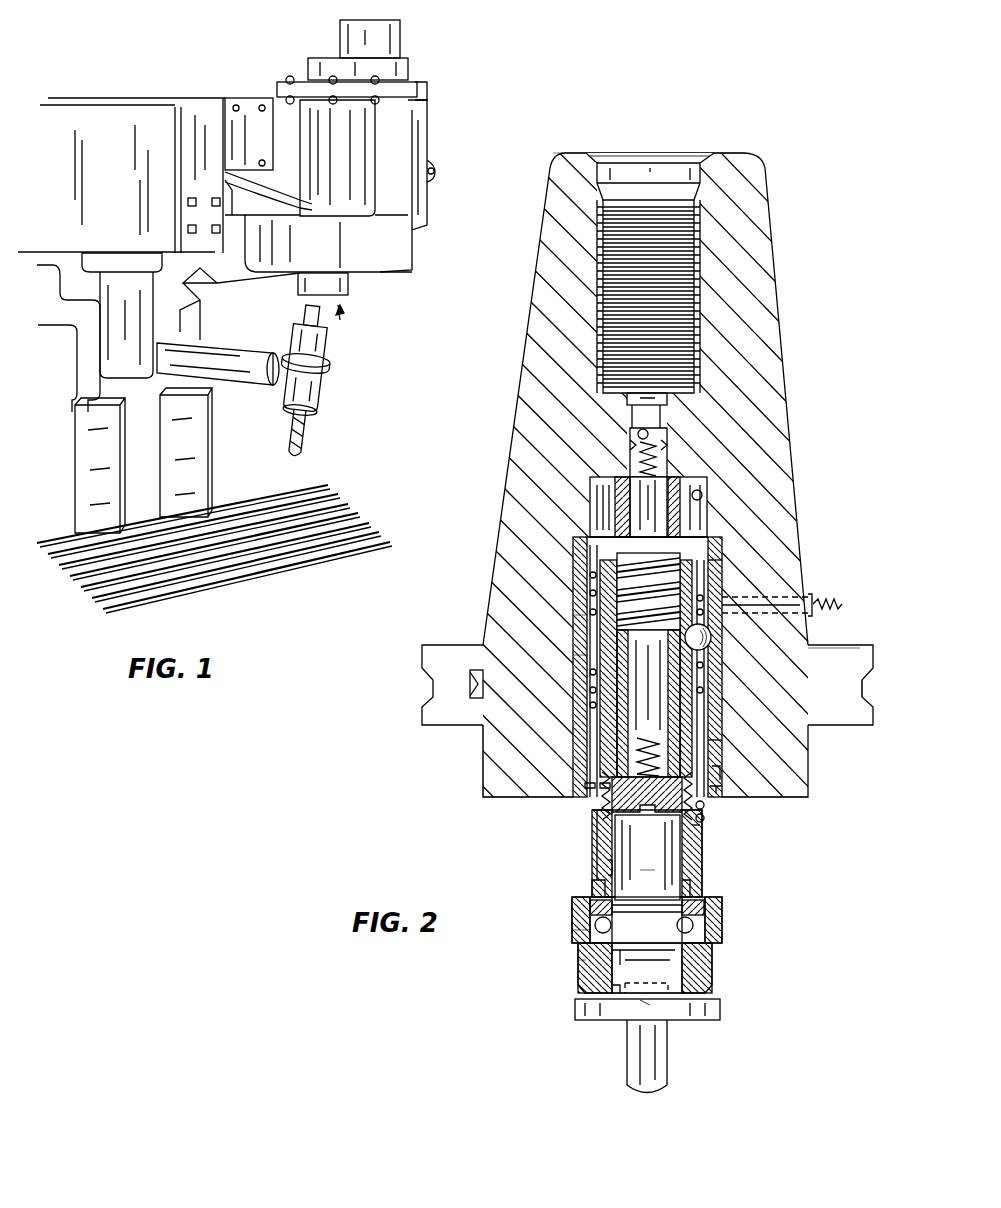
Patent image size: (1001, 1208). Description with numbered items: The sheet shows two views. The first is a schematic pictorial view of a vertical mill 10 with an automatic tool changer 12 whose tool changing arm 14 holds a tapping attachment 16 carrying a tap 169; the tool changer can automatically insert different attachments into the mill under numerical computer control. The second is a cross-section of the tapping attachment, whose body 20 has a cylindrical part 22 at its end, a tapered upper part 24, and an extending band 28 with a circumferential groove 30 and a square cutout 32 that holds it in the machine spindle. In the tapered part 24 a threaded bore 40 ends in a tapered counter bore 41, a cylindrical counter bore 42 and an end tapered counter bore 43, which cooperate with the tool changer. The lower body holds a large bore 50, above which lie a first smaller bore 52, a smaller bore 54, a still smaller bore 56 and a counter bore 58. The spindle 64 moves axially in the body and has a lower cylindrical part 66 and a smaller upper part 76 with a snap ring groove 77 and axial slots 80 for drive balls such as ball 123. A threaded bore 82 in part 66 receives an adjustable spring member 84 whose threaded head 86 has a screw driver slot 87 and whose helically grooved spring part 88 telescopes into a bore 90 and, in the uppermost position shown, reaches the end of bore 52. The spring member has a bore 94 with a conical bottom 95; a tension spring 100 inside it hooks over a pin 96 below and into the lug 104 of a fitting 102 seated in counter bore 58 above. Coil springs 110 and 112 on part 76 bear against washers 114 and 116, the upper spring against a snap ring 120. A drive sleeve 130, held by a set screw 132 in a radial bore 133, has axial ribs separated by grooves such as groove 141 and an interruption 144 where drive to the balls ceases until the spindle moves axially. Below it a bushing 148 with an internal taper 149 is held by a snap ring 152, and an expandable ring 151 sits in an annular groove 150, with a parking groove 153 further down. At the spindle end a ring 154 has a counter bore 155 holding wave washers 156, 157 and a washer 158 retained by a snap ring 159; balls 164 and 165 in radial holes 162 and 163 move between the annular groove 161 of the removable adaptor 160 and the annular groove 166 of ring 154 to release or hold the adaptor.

In FIG. 1, the vertical mill 10 is at (442, 112).
In FIG. 1, the automatic tool changer 12 is at (155, 140).
In FIG. 1, the tool changing arm 14 is at (250, 345).
In FIG. 1, the tapping attachment 16 is at (330, 403).
In FIG. 2, the tapping attachment 16 is at (427, 791).
In FIG. 1, the tap 169 is at (290, 440).
In FIG. 2, the tap 169 is at (635, 1062).
In FIG. 2, the body 20 is at (788, 392).
In FIG. 2, the cylindrical part 22 is at (490, 790).
In FIG. 2, the tapered upper part 24 is at (505, 372).
In FIG. 2, the circular part or band 28 is at (485, 742).
In FIG. 2, the circumferential peripheral groove 30 is at (422, 690).
In FIG. 2, the square cutout 32 is at (422, 662).
In FIG. 2, the threaded bore 40 is at (700, 262).
In FIG. 2, the tapered counter bore 41 is at (700, 195).
In FIG. 2, the cylindrical counter bore 42 is at (600, 170).
In FIG. 2, the end tapered counter bore 43 is at (700, 162).
In FIG. 2, the large bore 50 is at (692, 540).
In FIG. 2, the first smaller bore 52 is at (705, 500).
In FIG. 2, the smaller bore 54 is at (626, 492).
In FIG. 2, the still smaller bore 56 is at (635, 432).
In FIG. 2, the counter bore 58 is at (650, 410).
In FIG. 2, the spindle 64 is at (522, 885).
In FIG. 2, the cylindrical part 66 is at (592, 850).
In FIG. 2, the smaller diameter part 76 is at (640, 742).
In FIG. 2, the groove 77 is at (605, 585).
In FIG. 2, the axial slots 80 is at (690, 565).
In FIG. 2, the threaded bore 82 is at (608, 870).
In FIG. 2, the adjustable metal spring member 84 is at (612, 795).
In FIG. 2, the threaded head 86 is at (647, 857).
In FIG. 2, the screw driver slot 87 is at (651, 877).
In FIG. 2, the spring part 88 is at (703, 495).
In FIG. 2, the bore 90 is at (873, 712).
In FIG. 2, the bore 94 is at (706, 748).
In FIG. 2, the conical bottom 95 is at (706, 807).
In FIG. 2, the pin 96 is at (712, 789).
In FIG. 2, the tension spring 100 is at (668, 450).
In FIG. 2, the fitting 102 is at (665, 440).
In FIG. 2, the lug 104 is at (628, 455).
In FIG. 2, the upper coil spring 110 is at (706, 585).
In FIG. 2, the lower coil spring 112 is at (576, 660).
In FIG. 2, the washer 114 is at (592, 603).
In FIG. 2, the washer 116 is at (580, 622).
In FIG. 2, the snap ring 120 is at (712, 562).
In FIG. 2, the drive ball 123 is at (712, 637).
In FIG. 2, the cylindrical drive sleeve 130 is at (572, 552).
In FIG. 2, the set screw 132 is at (846, 605).
In FIG. 2, the radial bore 133 is at (812, 596).
In FIG. 2, the axial groove 141 is at (862, 655).
In FIG. 2, the interruption 144 is at (863, 688).
In FIG. 2, the bushing 148 is at (728, 770).
In FIG. 2, the taper 149 is at (602, 810).
In FIG. 2, the annular groove 150 is at (694, 828).
In FIG. 2, the expandable ring 151 is at (707, 818).
In FIG. 2, the snap ring 152 is at (585, 808).
In FIG. 2, the parking groove / enlarged spindle end 153 is at (700, 882).
In FIG. 2, the ring 154 is at (575, 935).
In FIG. 2, the counter bore 155 is at (572, 922).
In FIG. 2, the wave washer 156 is at (718, 908).
In FIG. 2, the wave washer 157 is at (715, 940).
In FIG. 2, the washer 158 is at (722, 920).
In FIG. 2, the snap ring 159 is at (706, 905).
In FIG. 2, the removable adaptor 160 is at (612, 987).
In FIG. 2, the annular groove 161 is at (649, 975).
In FIG. 2, the radial hole 162 is at (585, 988).
In FIG. 2, the radial hole 163 is at (712, 965).
In FIG. 2, the ball 164 is at (612, 955).
In FIG. 2, the ball 165 is at (648, 951).
In FIG. 2, the annular groove 166 is at (580, 958).